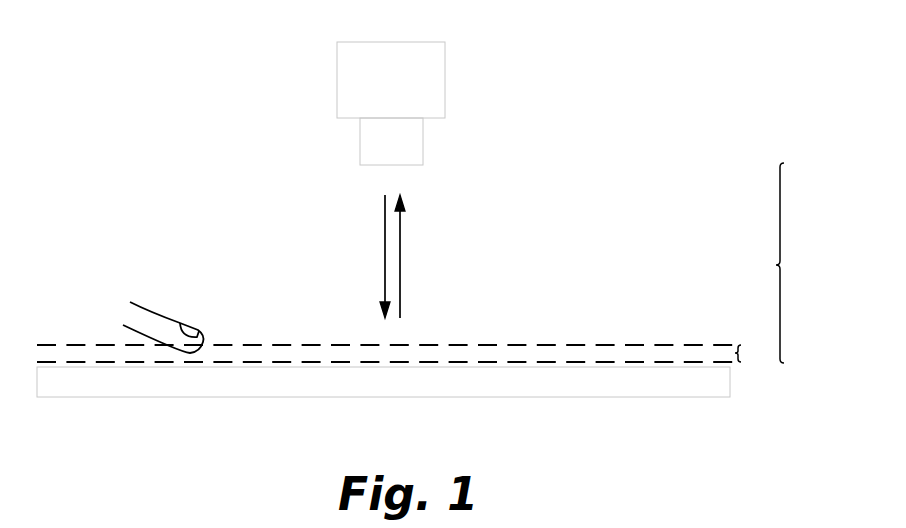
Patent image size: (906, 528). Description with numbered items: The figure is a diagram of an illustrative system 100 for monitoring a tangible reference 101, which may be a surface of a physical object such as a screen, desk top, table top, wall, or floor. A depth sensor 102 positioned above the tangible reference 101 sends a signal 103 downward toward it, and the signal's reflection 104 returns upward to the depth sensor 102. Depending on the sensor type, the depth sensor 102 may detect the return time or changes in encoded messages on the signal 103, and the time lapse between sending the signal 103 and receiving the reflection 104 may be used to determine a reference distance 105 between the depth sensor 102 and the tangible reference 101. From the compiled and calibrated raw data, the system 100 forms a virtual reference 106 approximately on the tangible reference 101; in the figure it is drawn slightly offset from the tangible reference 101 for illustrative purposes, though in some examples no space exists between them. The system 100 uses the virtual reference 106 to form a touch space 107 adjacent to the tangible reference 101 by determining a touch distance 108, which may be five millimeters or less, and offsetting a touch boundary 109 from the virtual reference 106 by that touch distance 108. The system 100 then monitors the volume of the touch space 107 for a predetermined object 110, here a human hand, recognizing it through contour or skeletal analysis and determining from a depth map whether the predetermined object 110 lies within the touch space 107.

The system 100 is at (162, 78).
The tangible reference 101 is at (162, 366).
The depth sensor 102 is at (338, 78).
The signal 103 is at (385, 247).
The signal's reflection 104 is at (401, 223).
The reference distance 105 is at (799, 263).
The virtual reference 106 is at (73, 362).
The touch space 107 is at (265, 354).
The touch distance 108 is at (755, 354).
The touch boundary 109 is at (482, 345).
The predetermined object 110 is at (180, 283).